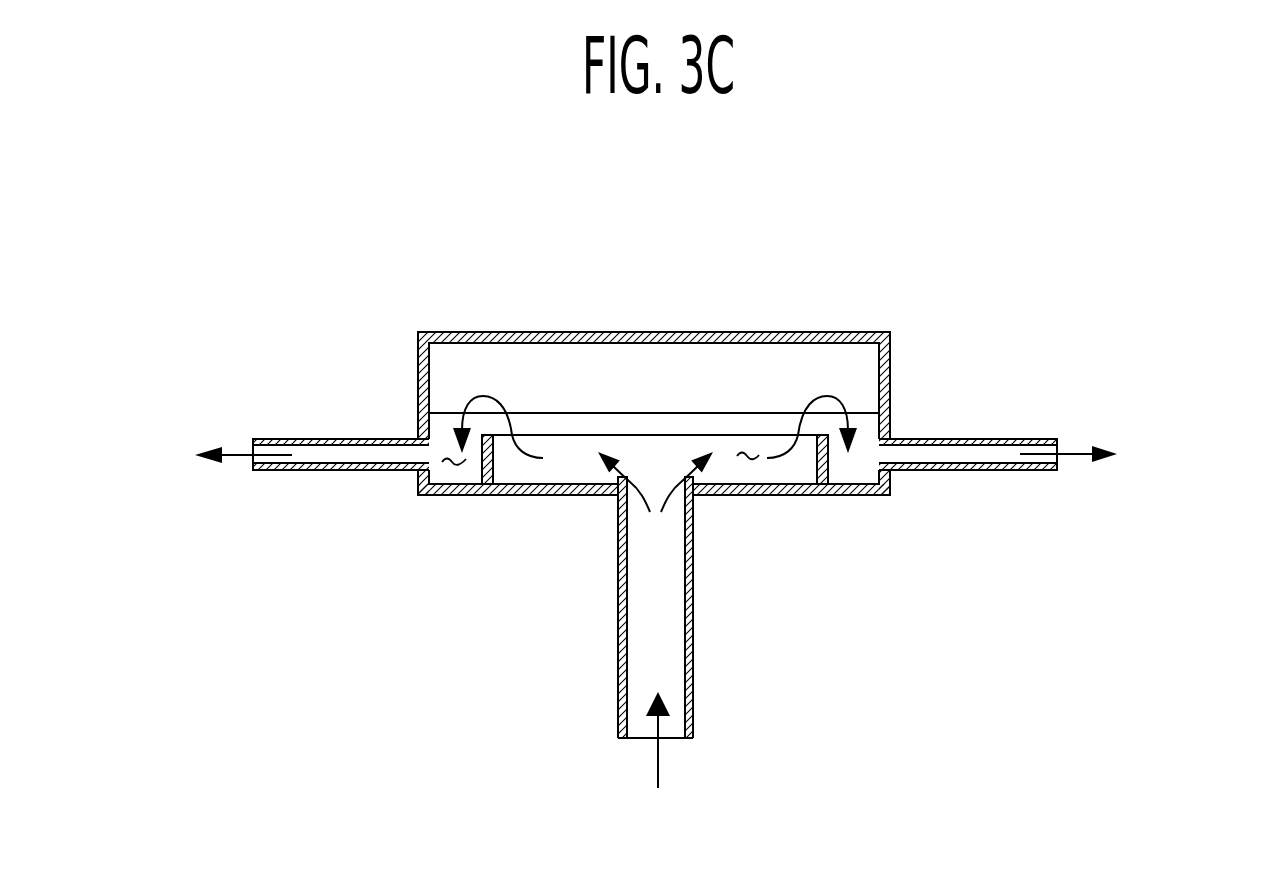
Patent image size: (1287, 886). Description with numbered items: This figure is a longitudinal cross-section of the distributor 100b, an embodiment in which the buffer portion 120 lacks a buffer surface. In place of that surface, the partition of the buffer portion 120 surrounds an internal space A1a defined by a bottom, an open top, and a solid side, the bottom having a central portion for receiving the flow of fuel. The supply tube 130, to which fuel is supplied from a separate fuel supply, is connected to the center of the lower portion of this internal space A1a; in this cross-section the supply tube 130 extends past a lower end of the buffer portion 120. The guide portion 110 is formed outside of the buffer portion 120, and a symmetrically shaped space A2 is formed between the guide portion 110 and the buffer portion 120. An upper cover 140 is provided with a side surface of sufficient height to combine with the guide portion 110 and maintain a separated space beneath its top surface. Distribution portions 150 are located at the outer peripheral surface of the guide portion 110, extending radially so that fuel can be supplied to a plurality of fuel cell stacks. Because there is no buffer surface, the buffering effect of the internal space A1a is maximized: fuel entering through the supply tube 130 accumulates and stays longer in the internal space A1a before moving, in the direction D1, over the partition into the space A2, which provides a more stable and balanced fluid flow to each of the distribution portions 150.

The distributor 100b is at (287, 253).
The guide portion 110 is at (892, 482).
The buffer portion 120 is at (828, 455).
The supply tube 130 is at (693, 668).
The upper cover 140 is at (653, 332).
The distribution portions 150 is at (307, 439).
The internal space A1a is at (742, 452).
The space A2 is at (455, 465).
The direction D1 is at (655, 405).